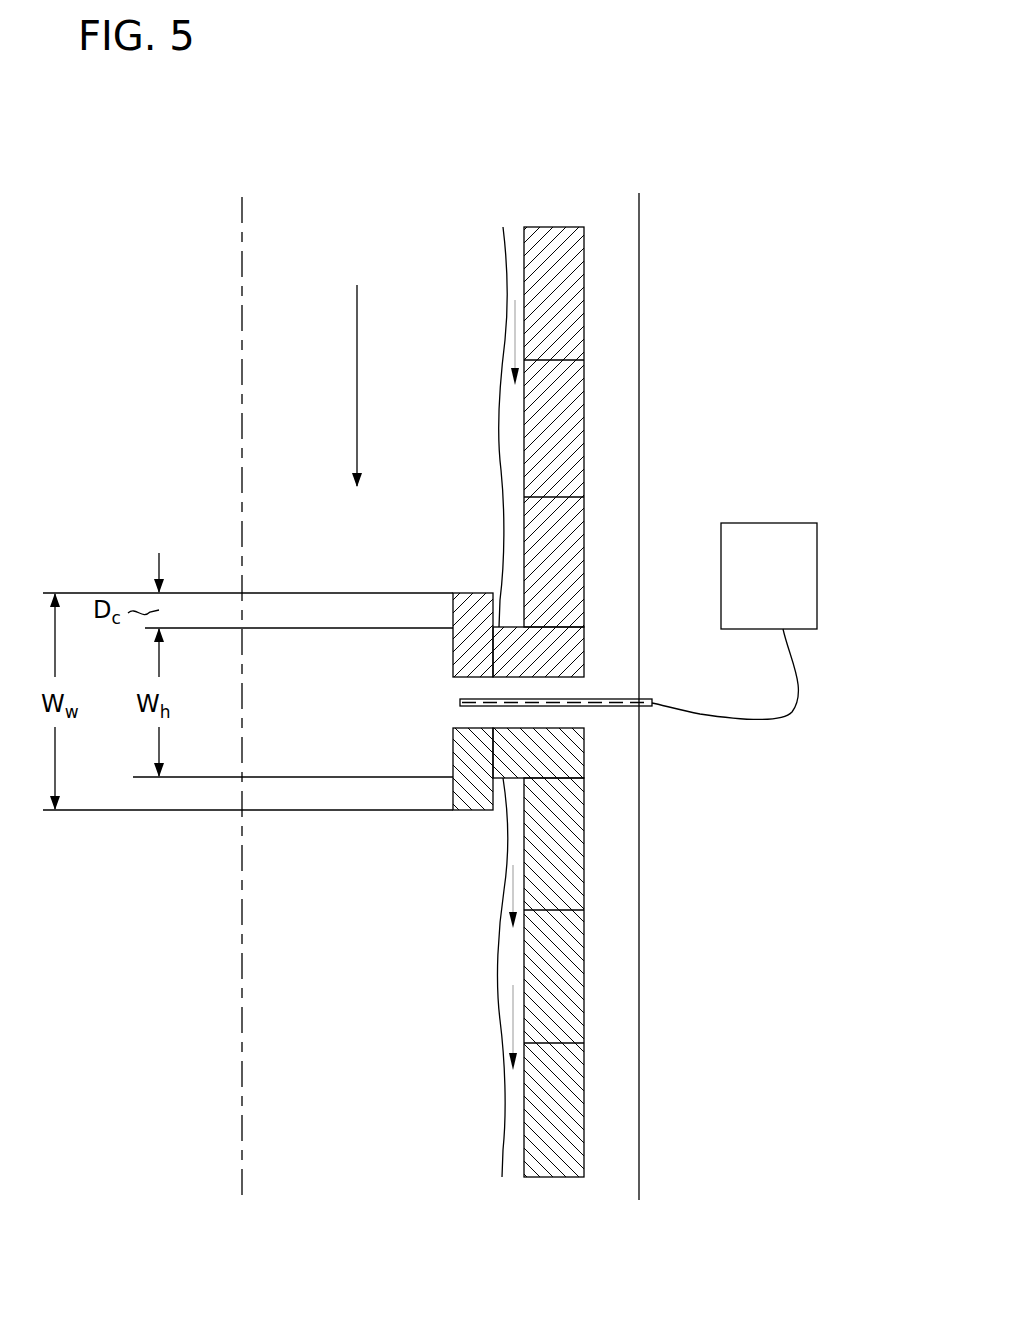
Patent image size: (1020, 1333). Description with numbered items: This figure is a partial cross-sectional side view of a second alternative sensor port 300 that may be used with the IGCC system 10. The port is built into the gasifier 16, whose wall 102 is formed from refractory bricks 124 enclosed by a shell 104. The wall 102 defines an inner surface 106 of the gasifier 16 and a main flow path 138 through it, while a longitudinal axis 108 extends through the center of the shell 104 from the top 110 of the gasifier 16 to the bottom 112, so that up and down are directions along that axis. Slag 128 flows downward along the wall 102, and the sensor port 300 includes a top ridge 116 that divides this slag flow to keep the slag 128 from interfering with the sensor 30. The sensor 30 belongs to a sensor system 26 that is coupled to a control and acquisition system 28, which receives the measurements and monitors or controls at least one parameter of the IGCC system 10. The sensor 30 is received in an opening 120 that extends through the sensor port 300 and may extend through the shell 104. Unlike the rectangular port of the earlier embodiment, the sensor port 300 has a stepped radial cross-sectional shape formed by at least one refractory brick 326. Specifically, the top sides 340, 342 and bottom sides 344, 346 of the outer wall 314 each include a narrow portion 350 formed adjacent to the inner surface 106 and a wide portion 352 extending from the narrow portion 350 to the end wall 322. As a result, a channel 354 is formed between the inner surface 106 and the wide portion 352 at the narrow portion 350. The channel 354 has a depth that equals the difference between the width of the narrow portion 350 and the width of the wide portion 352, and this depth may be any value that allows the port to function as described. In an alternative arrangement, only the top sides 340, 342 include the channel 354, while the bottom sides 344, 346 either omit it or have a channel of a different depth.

The IGCC system 10 is at (300, 166).
The top 110 is at (409, 223).
The refractory bricks 124 is at (565, 250).
The shell 104 is at (608, 297).
The wall 102 is at (507, 308).
The main flow path 138 is at (357, 355).
The gasifier 16 is at (331, 426).
The slag 128 is at (500, 409).
The narrow portion 350 is at (504, 550).
The top side 340 is at (288, 544).
The top side 342 is at (458, 579).
The top ridge 116 is at (453, 593).
The channel 354 is at (520, 600).
The control and acquisition system 28 is at (786, 590).
The refractory brick 326 is at (570, 648).
The end wall 322 is at (453, 665).
The opening 120 is at (458, 715).
The sensor 30 is at (645, 707).
The sensor system 26 is at (752, 748).
The sensor port 300 is at (443, 800).
The bottom side 344 is at (384, 874).
The bottom side 346 is at (458, 822).
The wide portion 352 is at (472, 822).
The outer wall 314 is at (498, 808).
The longitudinal axis 108 is at (242, 925).
The inner surface 106 is at (523, 1083).
The bottom 112 is at (417, 1158).